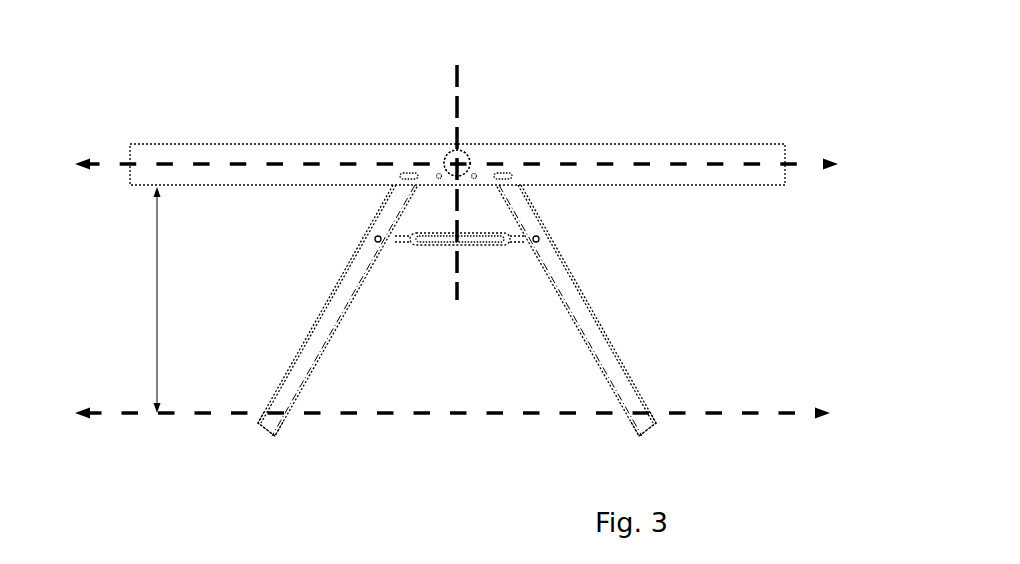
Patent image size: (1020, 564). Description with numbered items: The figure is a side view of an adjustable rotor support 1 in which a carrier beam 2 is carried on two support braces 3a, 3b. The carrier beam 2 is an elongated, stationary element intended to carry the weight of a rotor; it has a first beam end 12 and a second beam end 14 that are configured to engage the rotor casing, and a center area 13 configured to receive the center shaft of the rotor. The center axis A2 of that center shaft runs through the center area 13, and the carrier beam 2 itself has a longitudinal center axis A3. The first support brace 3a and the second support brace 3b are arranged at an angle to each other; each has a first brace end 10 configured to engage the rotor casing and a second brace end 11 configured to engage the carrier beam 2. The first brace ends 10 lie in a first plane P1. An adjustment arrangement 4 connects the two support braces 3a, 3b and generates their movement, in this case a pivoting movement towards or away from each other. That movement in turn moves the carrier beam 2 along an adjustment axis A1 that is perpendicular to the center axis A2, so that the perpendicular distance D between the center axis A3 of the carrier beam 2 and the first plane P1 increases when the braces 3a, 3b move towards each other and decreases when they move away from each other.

The adjustable rotor support 1 is at (276, 108).
The carrier beam 2 is at (630, 185).
The first support brace 3a is at (325, 335).
The second support brace 3b is at (600, 355).
The adjustment arrangement 4 is at (474, 284).
The first brace end 10 is at (293, 413).
The second brace end 11 is at (385, 185).
The first beam end 12 is at (96, 150).
The center area 13 is at (418, 148).
The second beam end 14 is at (814, 154).
The adjustment axis A1 is at (457, 99).
The center axis of the center shaft A2 is at (455, 166).
The center axis of the carrier beam A3 is at (697, 165).
The first plane P1 is at (450, 413).
The perpendicular distance D is at (144, 300).